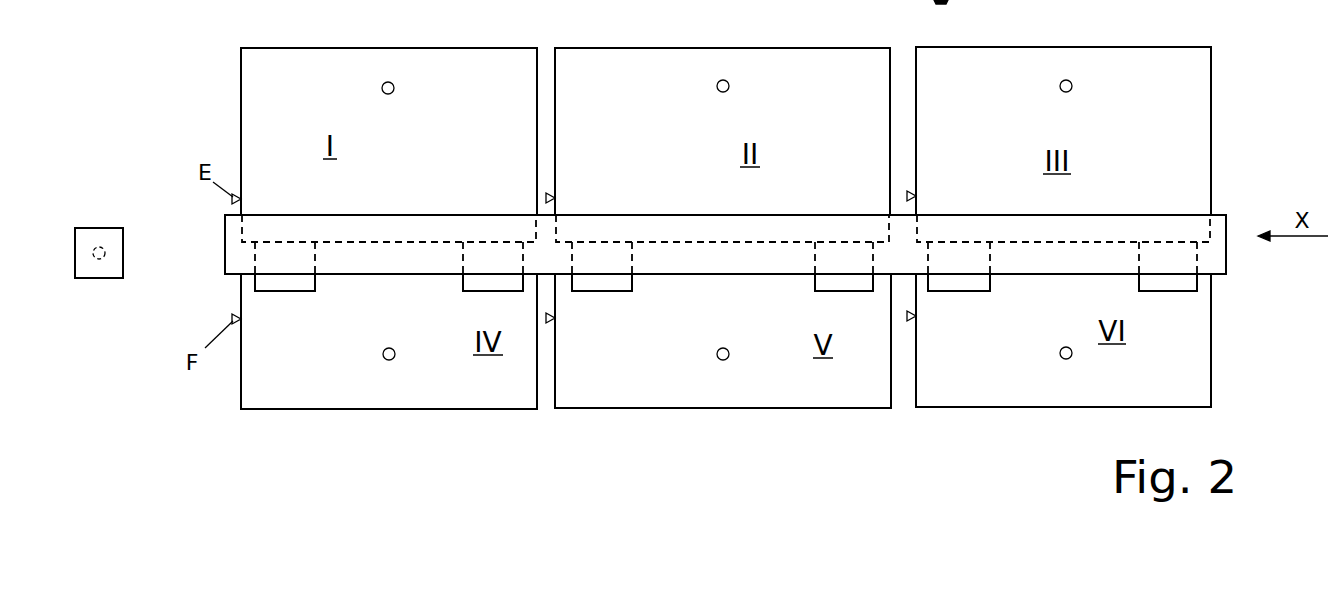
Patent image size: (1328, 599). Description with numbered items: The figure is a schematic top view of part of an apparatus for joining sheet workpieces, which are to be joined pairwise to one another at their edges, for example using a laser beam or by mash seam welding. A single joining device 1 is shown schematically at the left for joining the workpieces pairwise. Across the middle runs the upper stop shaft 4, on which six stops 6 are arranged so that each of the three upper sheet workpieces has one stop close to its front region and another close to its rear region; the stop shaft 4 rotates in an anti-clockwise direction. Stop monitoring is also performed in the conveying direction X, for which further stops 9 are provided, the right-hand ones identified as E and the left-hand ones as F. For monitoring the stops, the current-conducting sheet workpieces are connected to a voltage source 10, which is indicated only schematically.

The joining device 1 is at (124, 212).
The upper stop shaft 4 is at (1218, 224).
The stops 6 is at (332, 292).
The stops 9 is at (549, 197).
The voltage source 10 is at (386, 90).